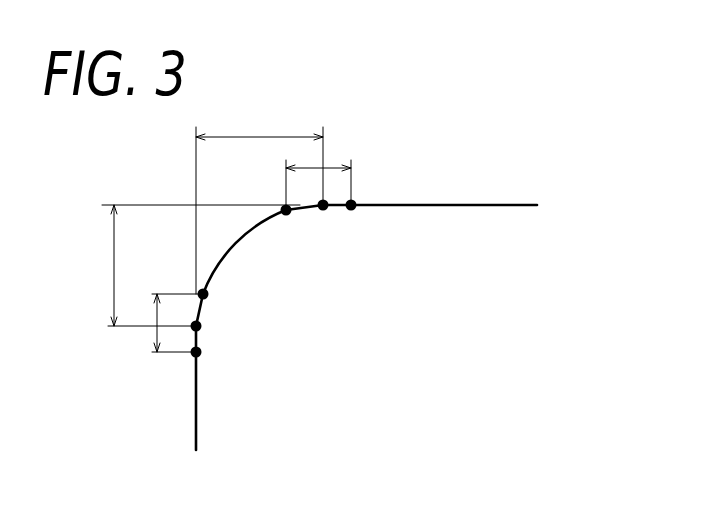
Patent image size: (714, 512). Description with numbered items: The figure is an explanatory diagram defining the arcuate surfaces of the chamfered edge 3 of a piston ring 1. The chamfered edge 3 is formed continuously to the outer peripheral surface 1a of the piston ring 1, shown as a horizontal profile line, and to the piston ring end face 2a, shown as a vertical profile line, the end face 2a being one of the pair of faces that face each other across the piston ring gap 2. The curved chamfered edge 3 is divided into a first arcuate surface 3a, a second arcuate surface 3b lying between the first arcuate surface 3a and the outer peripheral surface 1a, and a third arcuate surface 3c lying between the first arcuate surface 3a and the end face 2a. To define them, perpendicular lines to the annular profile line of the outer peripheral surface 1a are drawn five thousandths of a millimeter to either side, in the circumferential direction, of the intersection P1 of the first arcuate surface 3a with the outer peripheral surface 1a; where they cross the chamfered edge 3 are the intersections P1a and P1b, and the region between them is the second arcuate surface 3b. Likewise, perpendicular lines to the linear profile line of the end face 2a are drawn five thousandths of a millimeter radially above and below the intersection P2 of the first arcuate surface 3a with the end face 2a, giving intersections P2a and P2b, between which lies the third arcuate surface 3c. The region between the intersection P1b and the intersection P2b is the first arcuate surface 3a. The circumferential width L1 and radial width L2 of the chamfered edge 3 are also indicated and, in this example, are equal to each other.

The piston ring 1 is at (430, 171).
The outer peripheral surface 1a is at (427, 205).
The piston ring gap 2 is at (153, 388).
The piston ring end face 2a is at (195, 412).
The chamfered edge 3 is at (232, 246).
The first arcuate surface 3a is at (238, 241).
The second arcuate surface 3b is at (305, 207).
The third arcuate surface 3c is at (177, 313).
The intersection of first arcuate surface and outer peripheral surface P1 is at (323, 211).
The intersection P1a is at (353, 211).
The intersection P1b is at (287, 216).
The intersection of first arcuate surface and piston ring end face P2 is at (202, 327).
The intersection P2a is at (201, 355).
The intersection P2b is at (209, 294).
The circumferential width L1 is at (259, 125).
The radial width L2 is at (100, 265).